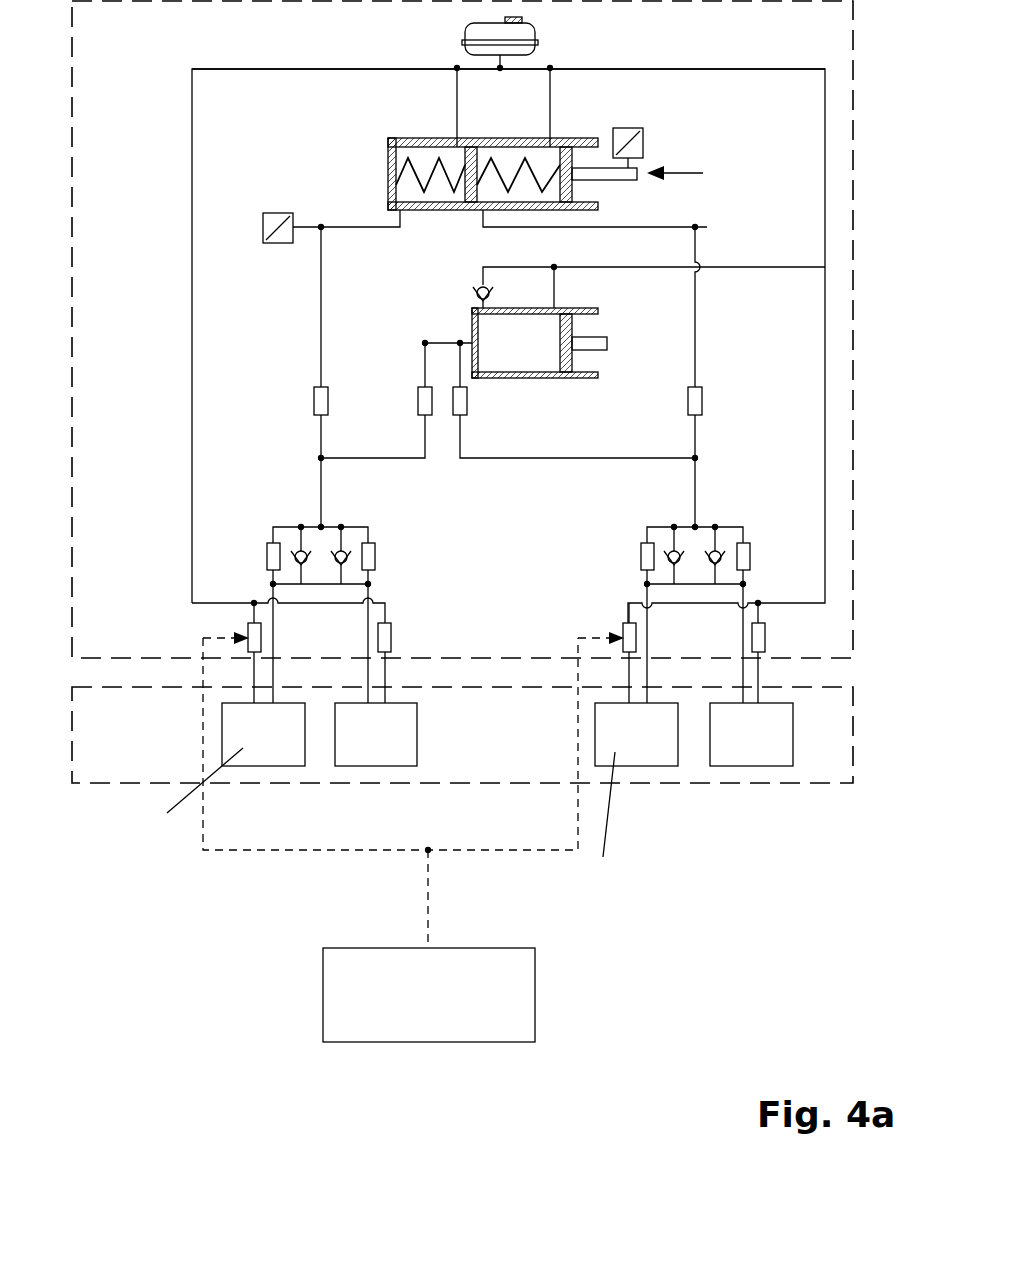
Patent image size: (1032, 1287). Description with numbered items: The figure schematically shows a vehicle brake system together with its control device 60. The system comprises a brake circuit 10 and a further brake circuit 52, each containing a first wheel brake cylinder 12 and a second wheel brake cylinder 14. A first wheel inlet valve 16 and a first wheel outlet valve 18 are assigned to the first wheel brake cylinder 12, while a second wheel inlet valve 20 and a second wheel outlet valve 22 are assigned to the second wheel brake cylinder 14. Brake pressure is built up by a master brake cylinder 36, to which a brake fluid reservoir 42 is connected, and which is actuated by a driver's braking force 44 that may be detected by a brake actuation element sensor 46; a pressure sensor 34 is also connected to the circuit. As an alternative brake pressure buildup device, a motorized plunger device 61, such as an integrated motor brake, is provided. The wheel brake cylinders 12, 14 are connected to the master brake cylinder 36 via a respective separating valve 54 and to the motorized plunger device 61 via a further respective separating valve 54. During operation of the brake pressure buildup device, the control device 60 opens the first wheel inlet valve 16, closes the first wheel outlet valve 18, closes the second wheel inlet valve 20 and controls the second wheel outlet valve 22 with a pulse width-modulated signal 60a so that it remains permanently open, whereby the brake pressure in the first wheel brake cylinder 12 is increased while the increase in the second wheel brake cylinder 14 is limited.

The brake circuit 10 is at (684, 862).
The first wheel brake cylinder 12 is at (383, 766).
The second wheel brake cylinder 14 is at (258, 766).
The first wheel inlet valve 16 is at (375, 556).
The first wheel outlet valve 18 is at (391, 637).
The second wheel inlet valve 20 is at (267, 556).
The second wheel outlet valve 22 is at (248, 630).
The pressure sensor 34 is at (278, 212).
The master brake cylinder 36 is at (458, 212).
The brake fluid reservoir 42 is at (470, 32).
The driver's braking force 44 is at (690, 172).
The brake actuation element sensor 46 is at (627, 128).
The brake circuit 52 is at (443, 740).
The separating valve 54 is at (314, 401).
The control device 60 is at (428, 1042).
The pulse width-modulated signal 60a is at (428, 900).
The motorized plunger device 61 is at (548, 380).